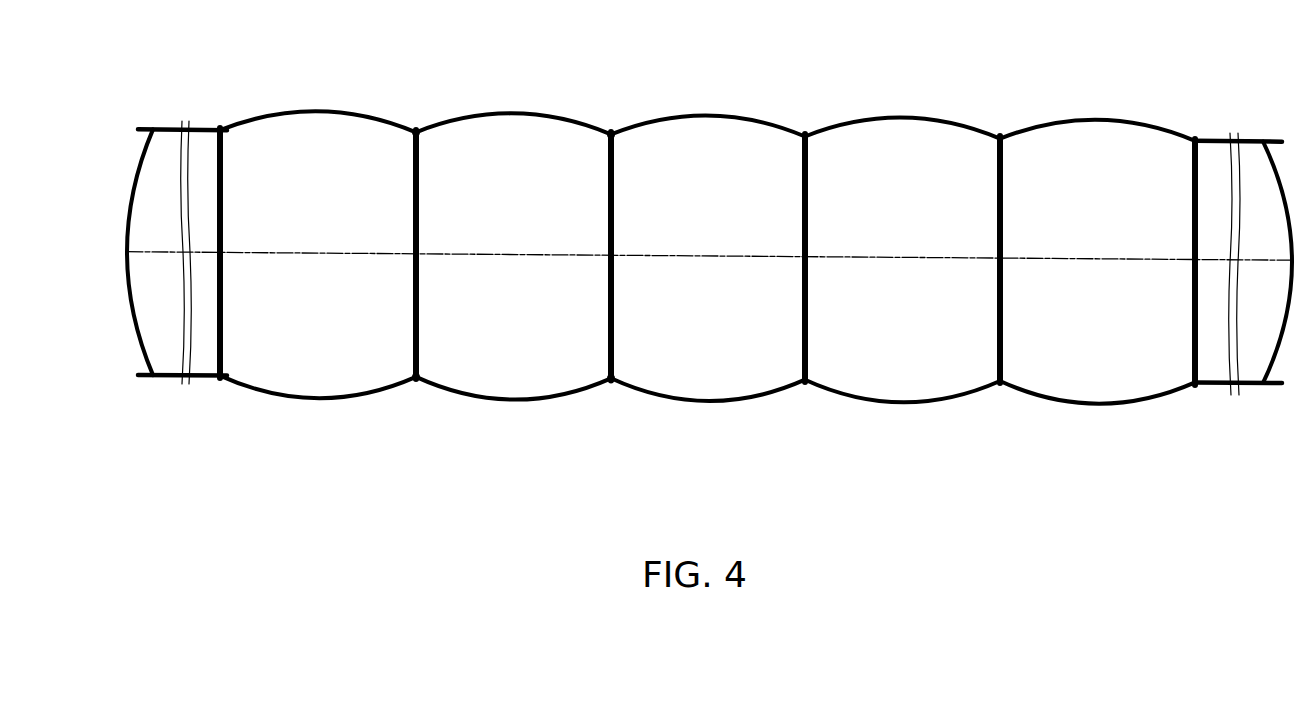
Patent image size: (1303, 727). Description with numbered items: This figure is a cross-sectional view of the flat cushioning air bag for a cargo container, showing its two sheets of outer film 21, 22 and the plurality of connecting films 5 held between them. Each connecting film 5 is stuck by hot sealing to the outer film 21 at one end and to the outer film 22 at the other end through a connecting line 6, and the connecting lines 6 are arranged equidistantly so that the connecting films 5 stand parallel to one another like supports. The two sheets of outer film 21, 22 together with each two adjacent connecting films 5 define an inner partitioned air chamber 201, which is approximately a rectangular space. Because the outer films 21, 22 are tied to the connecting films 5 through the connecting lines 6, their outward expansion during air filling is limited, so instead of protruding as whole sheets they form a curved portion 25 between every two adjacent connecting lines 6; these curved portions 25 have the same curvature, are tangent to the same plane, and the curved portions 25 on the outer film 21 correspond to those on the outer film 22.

The outer film 21 is at (168, 127).
The outer film 22 is at (170, 378).
The curved portion 25 is at (316, 108).
The connecting film 5 is at (420, 197).
The connecting line 6 is at (418, 128).
The inner partitioned air chamber 201 is at (715, 365).